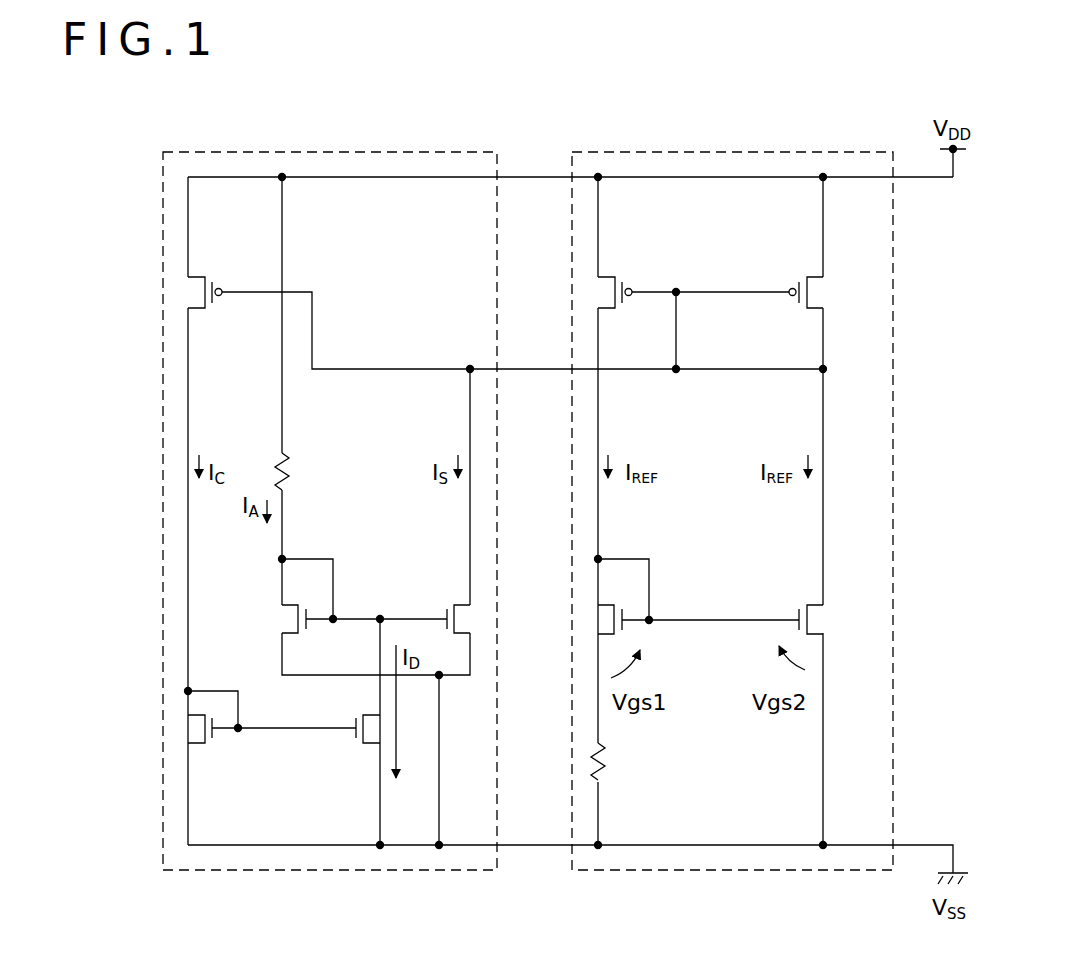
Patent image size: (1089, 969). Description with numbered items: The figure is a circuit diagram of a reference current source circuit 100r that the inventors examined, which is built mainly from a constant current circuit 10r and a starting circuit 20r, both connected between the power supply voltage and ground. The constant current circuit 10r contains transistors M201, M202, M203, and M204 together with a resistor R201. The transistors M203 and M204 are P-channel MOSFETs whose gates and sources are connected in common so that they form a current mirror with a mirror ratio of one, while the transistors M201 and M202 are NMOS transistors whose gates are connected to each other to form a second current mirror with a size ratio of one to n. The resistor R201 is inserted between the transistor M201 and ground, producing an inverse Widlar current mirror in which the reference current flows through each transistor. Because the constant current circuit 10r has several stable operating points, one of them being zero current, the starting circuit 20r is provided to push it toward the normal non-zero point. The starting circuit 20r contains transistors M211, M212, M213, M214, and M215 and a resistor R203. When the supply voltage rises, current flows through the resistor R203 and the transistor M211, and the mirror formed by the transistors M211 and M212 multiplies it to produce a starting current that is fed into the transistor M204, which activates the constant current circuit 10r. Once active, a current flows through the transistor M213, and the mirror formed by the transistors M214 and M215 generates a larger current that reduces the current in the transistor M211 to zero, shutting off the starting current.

The reference current source circuit 100r is at (1073, 95).
The constant current circuit 10r is at (768, 871).
The starting circuit 20r is at (320, 871).
The transistor M201 is at (629, 627).
The transistor M202 is at (790, 610).
The transistor M203 is at (620, 272).
The transistor M204 is at (804, 271).
The resistor R201 is at (611, 763).
The transistor M211 is at (282, 621).
The transistor M212 is at (446, 599).
The transistor M213 is at (210, 313).
The transistor M214 is at (210, 748).
The transistor M215 is at (358, 710).
The resistor R203 is at (292, 480).